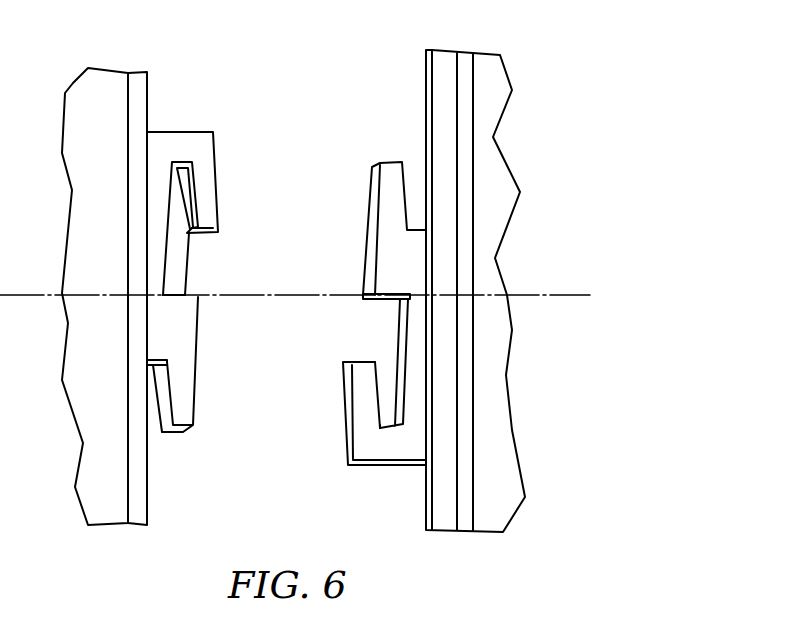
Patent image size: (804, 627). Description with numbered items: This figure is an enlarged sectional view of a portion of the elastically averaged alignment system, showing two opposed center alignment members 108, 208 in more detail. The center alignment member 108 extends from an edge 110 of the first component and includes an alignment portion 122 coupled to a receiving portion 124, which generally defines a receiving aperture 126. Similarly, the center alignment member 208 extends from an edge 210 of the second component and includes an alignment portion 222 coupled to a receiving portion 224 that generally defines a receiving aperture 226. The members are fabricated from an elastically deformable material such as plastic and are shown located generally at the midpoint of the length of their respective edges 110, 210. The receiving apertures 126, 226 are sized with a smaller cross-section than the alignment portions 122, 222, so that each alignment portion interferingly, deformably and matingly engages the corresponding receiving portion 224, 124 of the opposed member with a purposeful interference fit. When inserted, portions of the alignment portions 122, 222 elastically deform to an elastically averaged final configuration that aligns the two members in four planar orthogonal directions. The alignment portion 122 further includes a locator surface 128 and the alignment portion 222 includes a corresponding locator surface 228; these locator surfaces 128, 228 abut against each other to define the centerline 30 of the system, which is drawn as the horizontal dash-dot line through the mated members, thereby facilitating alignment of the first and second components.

The centerline 30 is at (572, 294).
The center alignment member 108 is at (232, 235).
The edge 110 is at (148, 470).
The alignment portion 122 is at (200, 356).
The receiving portion 124 is at (218, 186).
The receiving aperture 126 is at (183, 256).
The locator surface 128 is at (187, 298).
The center alignment member 208 is at (339, 278).
The edge 210 is at (427, 485).
The alignment portion 222 is at (366, 245).
The receiving portion 224 is at (348, 411).
The receiving aperture 226 is at (376, 350).
The locator surface 228 is at (386, 300).